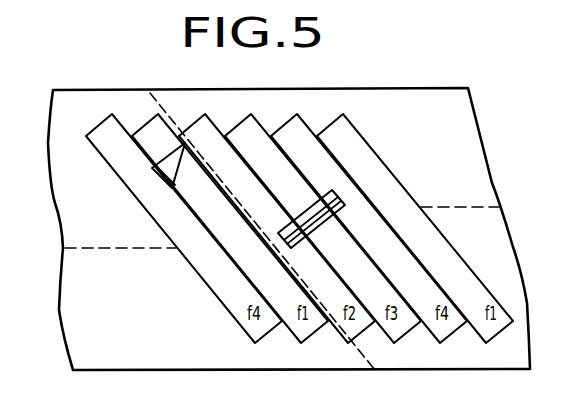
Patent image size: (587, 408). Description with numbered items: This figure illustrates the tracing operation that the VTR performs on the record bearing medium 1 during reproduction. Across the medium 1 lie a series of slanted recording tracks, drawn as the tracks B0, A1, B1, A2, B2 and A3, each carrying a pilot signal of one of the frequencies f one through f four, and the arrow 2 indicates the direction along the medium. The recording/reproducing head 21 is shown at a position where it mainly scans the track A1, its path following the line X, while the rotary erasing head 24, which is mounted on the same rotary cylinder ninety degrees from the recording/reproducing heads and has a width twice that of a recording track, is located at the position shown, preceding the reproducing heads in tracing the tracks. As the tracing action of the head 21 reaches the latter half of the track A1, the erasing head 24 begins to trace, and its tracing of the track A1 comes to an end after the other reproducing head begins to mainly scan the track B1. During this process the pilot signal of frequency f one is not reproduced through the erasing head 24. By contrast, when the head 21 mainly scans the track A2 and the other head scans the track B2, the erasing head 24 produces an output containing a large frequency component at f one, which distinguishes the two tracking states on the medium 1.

The substrate 1 is at (441, 88).
The scanning direction 2 is at (338, 70).
The recording/reproducing head 21 is at (190, 141).
The rotary erasing head 24 is at (325, 230).
The axis line X is at (149, 92).
The track B0 is at (97, 126).
The track A1 is at (152, 135).
The track B1 is at (193, 133).
The track A2 is at (243, 133).
The track B2 is at (290, 133).
The track A3 is at (338, 133).